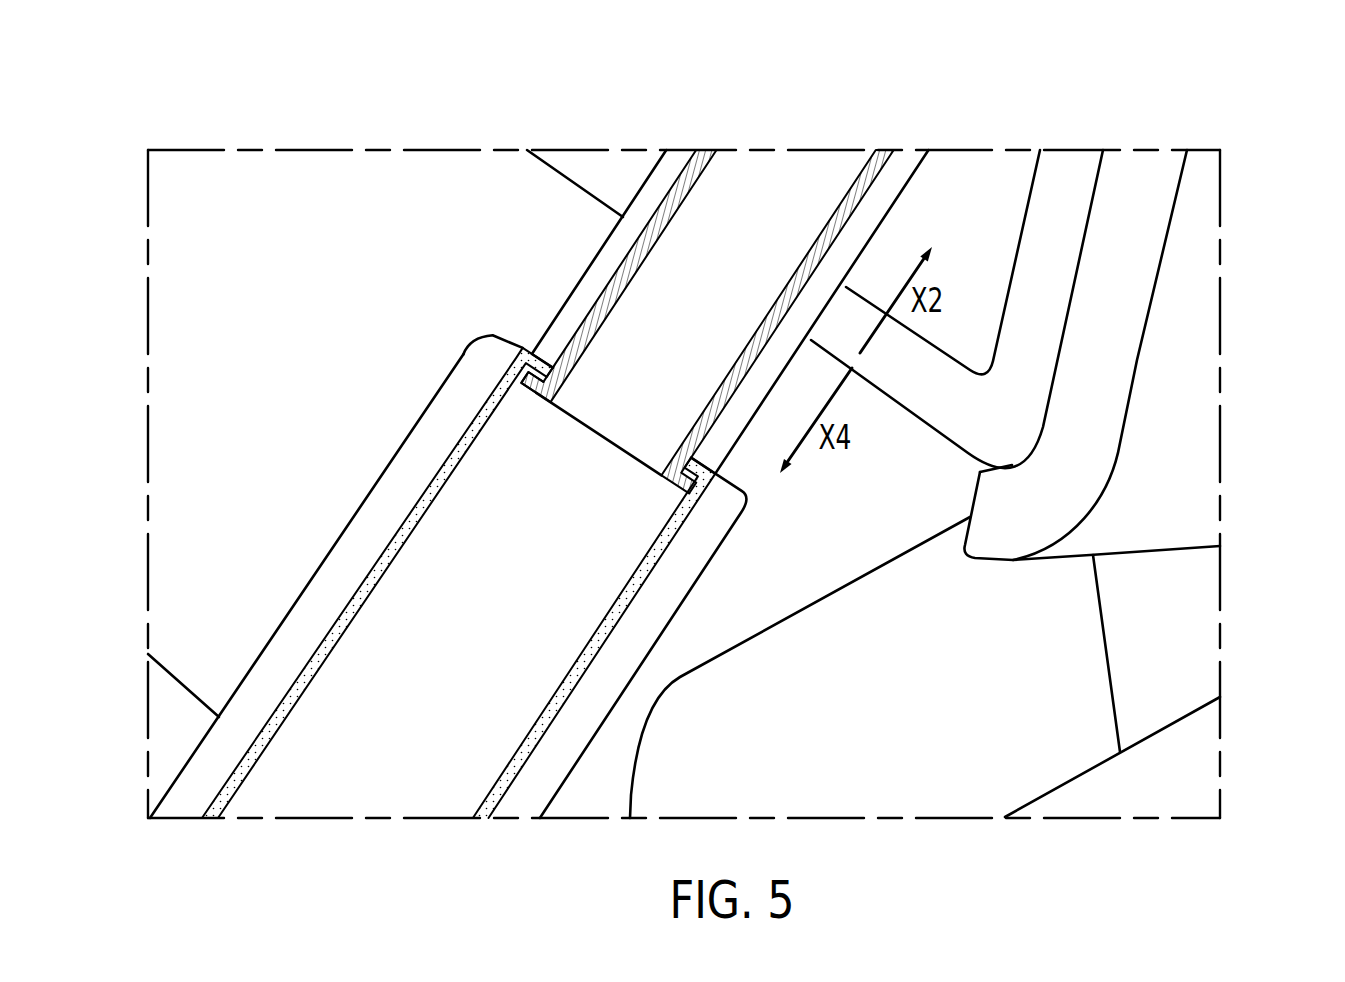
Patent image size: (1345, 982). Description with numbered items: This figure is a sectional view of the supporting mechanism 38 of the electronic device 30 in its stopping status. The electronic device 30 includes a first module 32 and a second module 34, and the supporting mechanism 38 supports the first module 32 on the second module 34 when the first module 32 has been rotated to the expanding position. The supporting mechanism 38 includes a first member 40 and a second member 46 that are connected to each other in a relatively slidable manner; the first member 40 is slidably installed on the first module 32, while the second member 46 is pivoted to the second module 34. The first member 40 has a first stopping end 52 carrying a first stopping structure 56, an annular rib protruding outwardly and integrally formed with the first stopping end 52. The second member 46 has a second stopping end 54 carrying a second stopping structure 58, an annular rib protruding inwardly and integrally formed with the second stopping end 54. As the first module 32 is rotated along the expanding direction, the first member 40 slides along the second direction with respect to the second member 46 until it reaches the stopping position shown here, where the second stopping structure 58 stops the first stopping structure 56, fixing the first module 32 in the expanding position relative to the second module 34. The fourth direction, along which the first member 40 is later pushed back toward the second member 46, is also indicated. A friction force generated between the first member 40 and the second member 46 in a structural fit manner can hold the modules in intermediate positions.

The electronic device 30 is at (1250, 110).
The first module 32 is at (988, 176).
The second module 34 is at (937, 772).
The supporting mechanism 38 is at (407, 484).
The first member 40 is at (605, 256).
The second member 46 is at (370, 524).
The first stopping end 52 is at (552, 342).
The second stopping end 54 is at (490, 368).
The first stopping structure 56 is at (540, 395).
The second stopping structure 58 is at (557, 380).